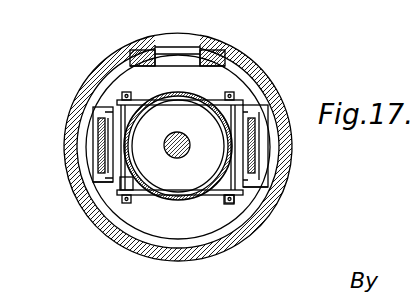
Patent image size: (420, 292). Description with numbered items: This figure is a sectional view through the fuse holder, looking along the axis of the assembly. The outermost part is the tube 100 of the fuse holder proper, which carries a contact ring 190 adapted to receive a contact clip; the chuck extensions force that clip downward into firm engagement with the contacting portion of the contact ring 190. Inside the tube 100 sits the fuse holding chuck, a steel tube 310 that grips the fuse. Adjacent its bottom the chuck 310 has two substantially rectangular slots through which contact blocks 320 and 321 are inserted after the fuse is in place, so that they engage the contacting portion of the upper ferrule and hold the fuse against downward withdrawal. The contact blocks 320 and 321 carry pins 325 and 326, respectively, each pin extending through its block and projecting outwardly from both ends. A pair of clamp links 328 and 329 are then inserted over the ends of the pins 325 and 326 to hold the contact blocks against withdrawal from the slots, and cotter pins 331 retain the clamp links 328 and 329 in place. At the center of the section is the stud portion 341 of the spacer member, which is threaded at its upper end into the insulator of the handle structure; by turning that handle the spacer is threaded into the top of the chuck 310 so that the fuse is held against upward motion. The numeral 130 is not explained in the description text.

The tube 100 is at (246, 55).
The contact ring 190 is at (103, 63).
The tube (fuse holding chuck) 310 is at (170, 203).
The contact block 321 is at (215, 161).
The stud portion 341 is at (182, 140).
The pin 325 is at (120, 103).
The clamp link 328 is at (146, 100).
The clamp link 329 is at (146, 186).
The contact block 320 is at (100, 125).
The pin 326 is at (258, 108).
The bracket 130 is at (102, 184).
The cotter pin 331 is at (240, 201).